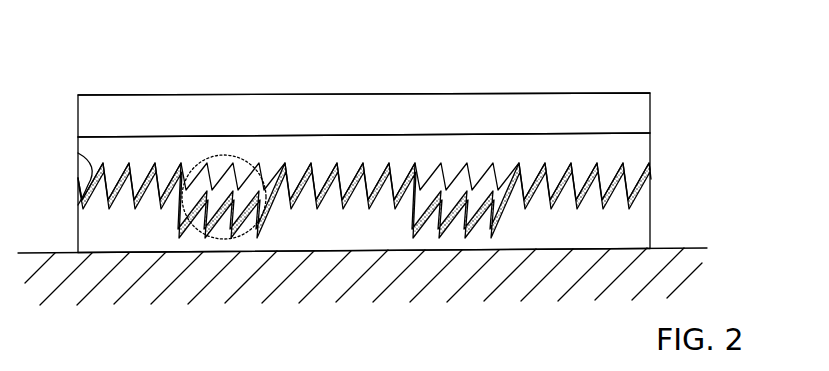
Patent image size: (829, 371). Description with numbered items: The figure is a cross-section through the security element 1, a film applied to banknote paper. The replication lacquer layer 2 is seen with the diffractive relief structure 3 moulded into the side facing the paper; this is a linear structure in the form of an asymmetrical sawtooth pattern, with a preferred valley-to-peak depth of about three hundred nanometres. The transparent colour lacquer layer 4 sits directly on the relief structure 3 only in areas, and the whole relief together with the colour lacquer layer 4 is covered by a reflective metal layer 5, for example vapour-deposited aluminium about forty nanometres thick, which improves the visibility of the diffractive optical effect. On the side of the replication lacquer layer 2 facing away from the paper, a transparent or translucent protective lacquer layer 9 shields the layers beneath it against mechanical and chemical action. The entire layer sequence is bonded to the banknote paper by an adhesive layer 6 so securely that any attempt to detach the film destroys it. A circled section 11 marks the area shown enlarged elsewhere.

The security element 1 is at (140, 96).
The replication lacquer layer 2 is at (647, 152).
The diffractive relief structure 3 is at (76, 154).
The transparent colour lacquer layer 4 is at (493, 177).
The reflective metal layer 5 is at (647, 176).
The adhesive layer 6 is at (647, 216).
The protective lacquer layer 9 is at (647, 112).
The section 11 is at (233, 155).